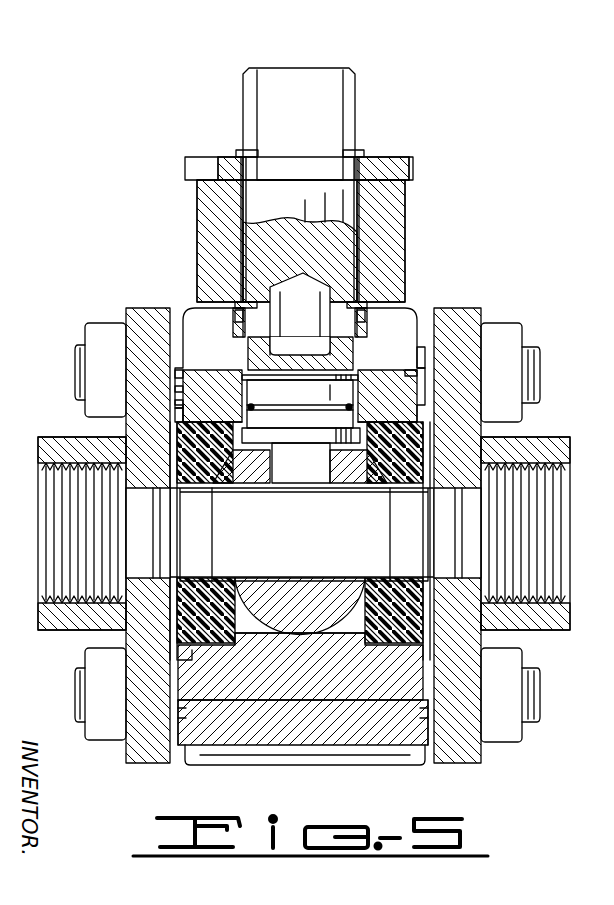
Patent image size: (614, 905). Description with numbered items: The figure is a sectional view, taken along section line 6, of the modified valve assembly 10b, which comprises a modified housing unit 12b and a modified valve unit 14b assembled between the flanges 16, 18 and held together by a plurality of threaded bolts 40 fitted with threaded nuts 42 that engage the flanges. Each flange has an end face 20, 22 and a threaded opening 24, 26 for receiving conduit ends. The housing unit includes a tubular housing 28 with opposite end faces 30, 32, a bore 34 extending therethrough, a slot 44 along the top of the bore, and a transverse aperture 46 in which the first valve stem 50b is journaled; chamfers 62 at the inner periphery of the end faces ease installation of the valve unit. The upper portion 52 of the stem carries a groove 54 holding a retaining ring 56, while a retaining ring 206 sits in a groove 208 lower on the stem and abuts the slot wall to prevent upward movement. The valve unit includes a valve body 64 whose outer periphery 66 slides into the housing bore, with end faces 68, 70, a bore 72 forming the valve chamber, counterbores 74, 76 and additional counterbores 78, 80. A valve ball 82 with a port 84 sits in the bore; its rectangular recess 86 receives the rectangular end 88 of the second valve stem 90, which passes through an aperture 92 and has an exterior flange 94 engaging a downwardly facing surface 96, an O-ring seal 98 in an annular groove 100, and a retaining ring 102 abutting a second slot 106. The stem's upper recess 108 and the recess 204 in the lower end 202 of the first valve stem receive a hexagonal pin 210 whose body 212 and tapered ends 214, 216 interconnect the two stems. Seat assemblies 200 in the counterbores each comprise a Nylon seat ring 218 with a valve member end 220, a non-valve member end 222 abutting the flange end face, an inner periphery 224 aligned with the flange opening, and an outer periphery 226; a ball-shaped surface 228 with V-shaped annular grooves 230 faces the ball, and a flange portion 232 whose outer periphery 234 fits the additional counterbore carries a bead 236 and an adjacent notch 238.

The section line 6- 6 is at (300, 57).
The modified valve assembly 10b is at (428, 166).
The modified housing unit 12b is at (412, 266).
The modified valve unit 14b is at (438, 376).
The flange 16 is at (128, 760).
The flange 18 is at (475, 760).
The end face 20 is at (178, 765).
The end face 22 is at (432, 762).
The threaded opening 24 is at (42, 480).
The threaded opening 26 is at (568, 590).
The tubular housing 28 is at (392, 242).
The end face 30 is at (178, 718).
The end face 32 is at (430, 705).
The bore 34 is at (300, 700).
The threaded bolt 40 is at (75, 372).
The threaded nut 42 is at (104, 330).
The slot 44 is at (300, 365).
The aperture 46 is at (245, 212).
The first valve stem 50b is at (357, 216).
The upper portion 52 is at (336, 98).
The groove 54 is at (262, 158).
The retaining ring 56 is at (241, 152).
The chamfer 62 is at (186, 718).
The valve body 64 is at (318, 700).
The outer periphery 66 is at (360, 703).
The end face 68 is at (178, 680).
The end face 70 is at (430, 678).
The bore 72 is at (300, 666).
The counterbore 74 is at (236, 634).
The counterbore 76 is at (372, 645).
The counterbore 78 is at (186, 660).
The counterbore 80 is at (372, 648).
The valve ball 82 is at (300, 582).
The port 84 is at (301, 534).
The rectangular recess 86 is at (318, 482).
The rectangular end 88 is at (298, 488).
The second valve stem 90 is at (356, 398).
The aperture 92 is at (240, 401).
The exterior flange 94 is at (315, 470).
The downwardly facing surface 96 is at (368, 420).
The O-ring seal 98 is at (244, 412).
The annular groove 100 is at (308, 404).
The retaining ring 102 is at (242, 378).
The second slot 106 is at (372, 372).
The recess 108 is at (318, 372).
The seat assembly 200 is at (215, 573).
The lower end 202 is at (360, 312).
The recess 204 is at (360, 303).
The retaining ring 206 is at (242, 312).
The groove 208 is at (248, 290).
The pin 210 is at (362, 334).
The body 212 is at (292, 305).
The tapered end 214 is at (280, 406).
The tapered end 216 is at (305, 282).
The seat ring 218 is at (400, 452).
The valve member end 220 is at (360, 620).
The non-valve member end 222 is at (190, 605).
The inner periphery 224 is at (195, 578).
The outer periphery 226 is at (225, 660).
The surface 228 is at (238, 602).
The annular groove 230 is at (370, 592).
The flange portion 232 is at (180, 410).
The outer periphery 234 is at (178, 378).
The bead 236 is at (176, 394).
The notch 238 is at (180, 425).